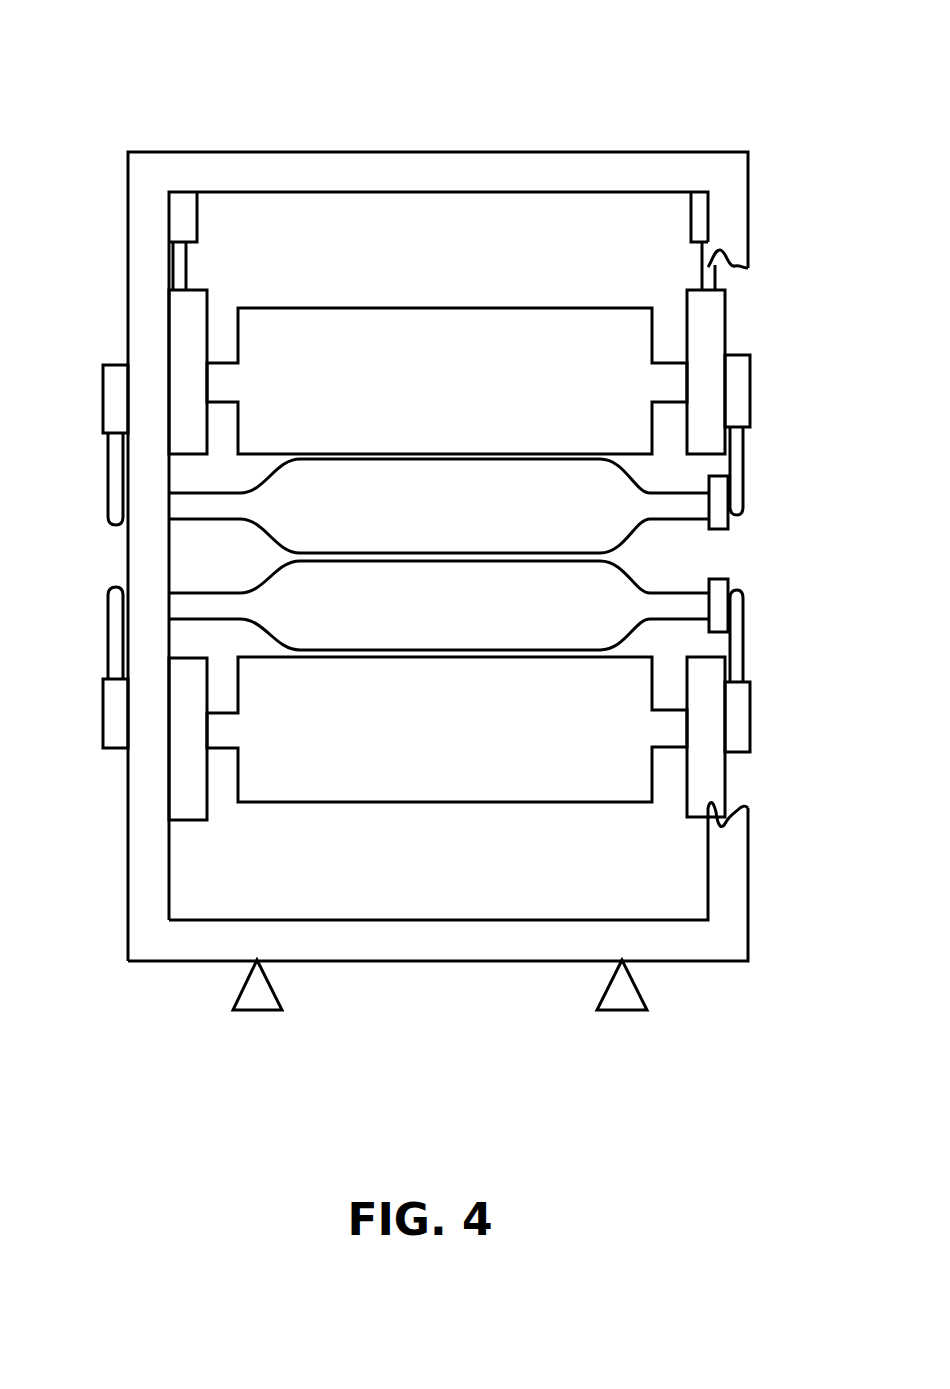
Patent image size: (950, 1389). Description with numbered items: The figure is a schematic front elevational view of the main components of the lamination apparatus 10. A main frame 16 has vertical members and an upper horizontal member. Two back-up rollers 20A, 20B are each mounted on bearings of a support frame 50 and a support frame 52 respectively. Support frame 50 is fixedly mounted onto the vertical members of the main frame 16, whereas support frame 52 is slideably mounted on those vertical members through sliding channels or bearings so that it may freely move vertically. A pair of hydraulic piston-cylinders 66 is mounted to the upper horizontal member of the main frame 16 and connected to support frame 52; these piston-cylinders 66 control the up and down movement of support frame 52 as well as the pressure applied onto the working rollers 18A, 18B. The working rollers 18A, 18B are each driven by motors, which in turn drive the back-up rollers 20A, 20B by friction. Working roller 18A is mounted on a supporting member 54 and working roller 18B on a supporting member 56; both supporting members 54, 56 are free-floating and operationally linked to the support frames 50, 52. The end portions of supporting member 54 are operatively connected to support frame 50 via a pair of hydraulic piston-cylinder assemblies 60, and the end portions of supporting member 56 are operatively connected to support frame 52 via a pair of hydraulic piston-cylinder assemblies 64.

The connector assembly 10 is at (113, 87).
The main frame 16 is at (446, 151).
The working roller 18A is at (480, 612).
The working roller 18B is at (484, 510).
The back-up roller 20A is at (398, 740).
The back-up roller 20B is at (398, 383).
The support frame 50 is at (188, 787).
The support frame 52 is at (187, 322).
The supporting member 54 is at (125, 578).
The supporting member 56 is at (124, 528).
The hydraulic piston-cylinder assembly 60 is at (118, 713).
The hydraulic piston-cylinder assembly 64 is at (115, 408).
The hydraulic piston-cylinder 66 is at (183, 218).